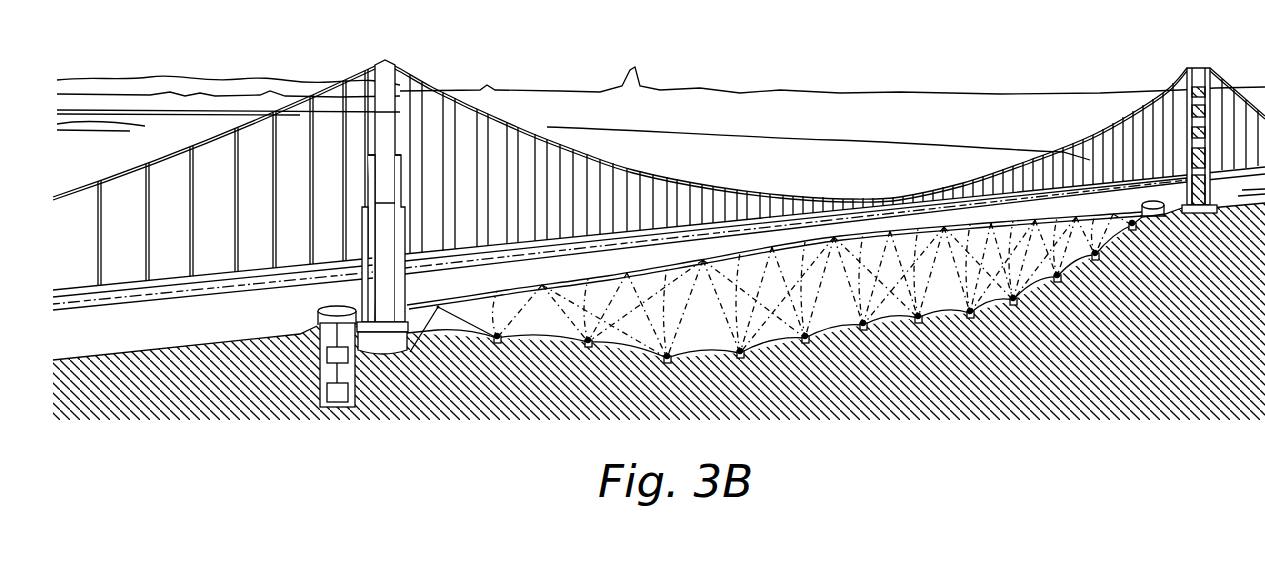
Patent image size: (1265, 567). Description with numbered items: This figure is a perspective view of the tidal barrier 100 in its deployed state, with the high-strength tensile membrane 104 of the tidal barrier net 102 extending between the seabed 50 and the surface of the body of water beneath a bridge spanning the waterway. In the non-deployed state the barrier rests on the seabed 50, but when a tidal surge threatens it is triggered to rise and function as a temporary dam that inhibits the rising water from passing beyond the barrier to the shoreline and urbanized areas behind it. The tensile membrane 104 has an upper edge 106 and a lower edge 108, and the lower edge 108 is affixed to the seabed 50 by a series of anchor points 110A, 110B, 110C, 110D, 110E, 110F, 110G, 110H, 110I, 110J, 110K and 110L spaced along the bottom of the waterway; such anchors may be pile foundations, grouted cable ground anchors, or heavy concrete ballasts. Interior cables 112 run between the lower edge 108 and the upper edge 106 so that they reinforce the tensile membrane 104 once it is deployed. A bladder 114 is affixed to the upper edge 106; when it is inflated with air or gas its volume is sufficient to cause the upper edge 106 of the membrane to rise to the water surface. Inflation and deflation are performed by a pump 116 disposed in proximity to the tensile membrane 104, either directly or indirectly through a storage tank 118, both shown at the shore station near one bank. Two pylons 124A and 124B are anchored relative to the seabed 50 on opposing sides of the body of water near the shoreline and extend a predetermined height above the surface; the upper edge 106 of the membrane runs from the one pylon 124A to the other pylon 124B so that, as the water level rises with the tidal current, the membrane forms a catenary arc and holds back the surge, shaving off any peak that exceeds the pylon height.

The seabed 50 is at (1172, 383).
The tidal barrier 100 is at (659, 207).
The tidal barrier net 102 is at (897, 198).
The tensile membrane 104 is at (528, 343).
The upper edge 106 is at (665, 265).
The lower edge 108 is at (563, 303).
The anchor point 110A is at (1164, 253).
The anchor point 110B is at (1137, 282).
The anchor point 110C is at (1085, 300).
The anchor point 110D is at (1055, 327).
The anchor point 110E is at (995, 330).
The anchor point 110F is at (954, 346).
The anchor point 110G is at (892, 350).
The anchor point 110H is at (840, 367).
The anchor point 110I is at (770, 381).
The anchor point 110J is at (699, 383).
The anchor point 110K is at (620, 370).
The anchor point 110L is at (494, 342).
The interior cables 112 is at (923, 277).
The bladder 114 is at (914, 274).
The pump 116 is at (327, 393).
The storage tank 118 is at (327, 356).
The pylon 124A is at (1130, 224).
The pylon 124B is at (300, 360).